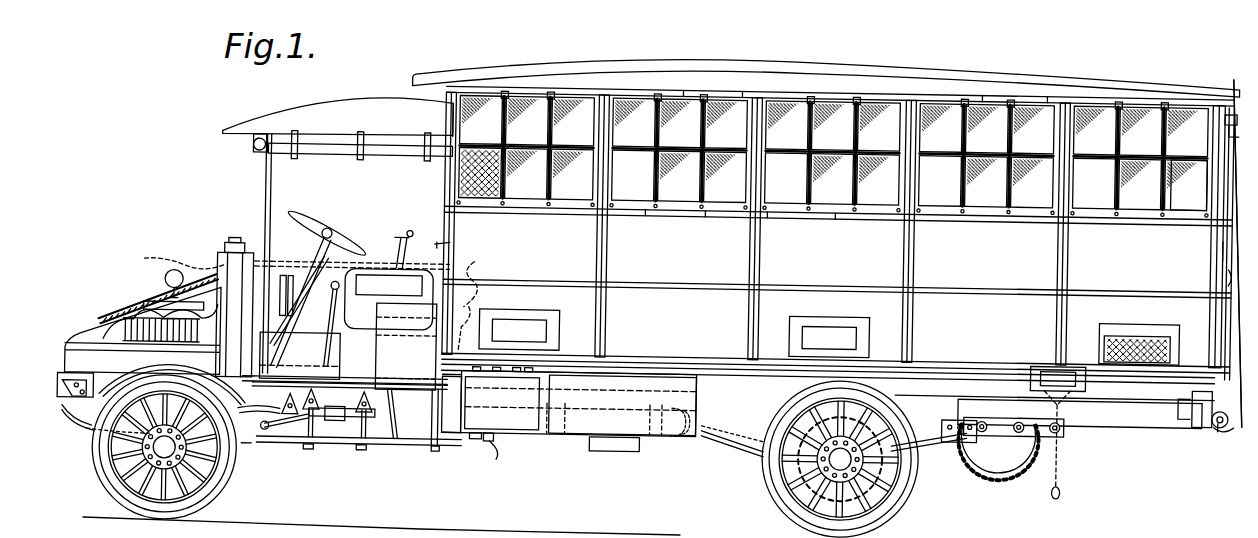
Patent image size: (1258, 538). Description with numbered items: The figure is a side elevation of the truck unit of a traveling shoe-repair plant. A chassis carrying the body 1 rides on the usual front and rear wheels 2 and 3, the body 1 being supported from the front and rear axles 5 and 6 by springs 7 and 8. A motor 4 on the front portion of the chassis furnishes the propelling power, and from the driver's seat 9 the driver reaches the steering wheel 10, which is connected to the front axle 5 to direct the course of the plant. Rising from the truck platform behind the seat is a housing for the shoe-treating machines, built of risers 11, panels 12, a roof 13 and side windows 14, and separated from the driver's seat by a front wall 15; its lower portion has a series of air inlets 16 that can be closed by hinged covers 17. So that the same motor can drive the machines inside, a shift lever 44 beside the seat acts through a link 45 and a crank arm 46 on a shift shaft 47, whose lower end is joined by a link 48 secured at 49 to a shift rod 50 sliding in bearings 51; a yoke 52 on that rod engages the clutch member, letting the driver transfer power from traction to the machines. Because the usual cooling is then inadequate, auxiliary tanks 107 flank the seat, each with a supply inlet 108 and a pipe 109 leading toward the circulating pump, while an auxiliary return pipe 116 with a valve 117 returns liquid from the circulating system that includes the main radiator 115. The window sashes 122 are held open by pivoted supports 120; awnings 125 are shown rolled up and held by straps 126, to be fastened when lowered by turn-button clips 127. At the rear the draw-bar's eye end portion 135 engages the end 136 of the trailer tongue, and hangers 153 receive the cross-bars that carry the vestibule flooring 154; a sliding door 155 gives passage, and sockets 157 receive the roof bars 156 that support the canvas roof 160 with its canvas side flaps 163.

The body 1 is at (1108, 412).
The front wheels 2 is at (210, 466).
The rear wheels 3 is at (912, 478).
The motor 4 is at (125, 300).
The front axle 5 is at (112, 486).
The rear axle 6 is at (772, 490).
The spring 7 is at (88, 428).
The spring 8 is at (916, 430).
The driver's seat 9 is at (345, 320).
The steering wheel 10 is at (335, 229).
The risers 11 is at (740, 310).
The panels 12 is at (844, 246).
The roof 13 is at (886, 60).
The side windows 14 is at (843, 115).
The front wall 15 is at (440, 210).
The air inlets 16 is at (1138, 318).
The removable covers 17 is at (516, 320).
The shift lever 44 is at (401, 240).
The link 45 is at (440, 272).
The crank arm 46 is at (466, 300).
The shift shaft 47 is at (430, 333).
The link 48 is at (500, 428).
The connection 49 is at (482, 436).
The shift rod 50 is at (492, 434).
The bearings 51 is at (496, 452).
The yoke 52 is at (452, 440).
The auxiliary tanks 107 is at (432, 352).
The supply inlet 108 is at (432, 238).
The pipe 109 is at (402, 442).
The main radiator 115 is at (212, 256).
The auxiliary return pipe 116 is at (163, 268).
The valve 117 is at (356, 255).
The supports 120 is at (764, 198).
The windows 122 is at (640, 204).
The awnings 125 is at (680, 80).
The straps 126 is at (737, 82).
The turn-button clips 127 is at (700, 206).
The eye end portion 135 is at (1212, 412).
The end of trailer tongue 136 is at (1226, 414).
The hangers 153 is at (1190, 412).
The flooring 154 is at (1060, 470).
The sliding door 155 is at (1218, 228).
The roof bars 156 is at (1224, 90).
The sockets 157 is at (1200, 140).
The canvas 160 is at (1227, 60).
The canvas flaps 163 is at (1224, 262).